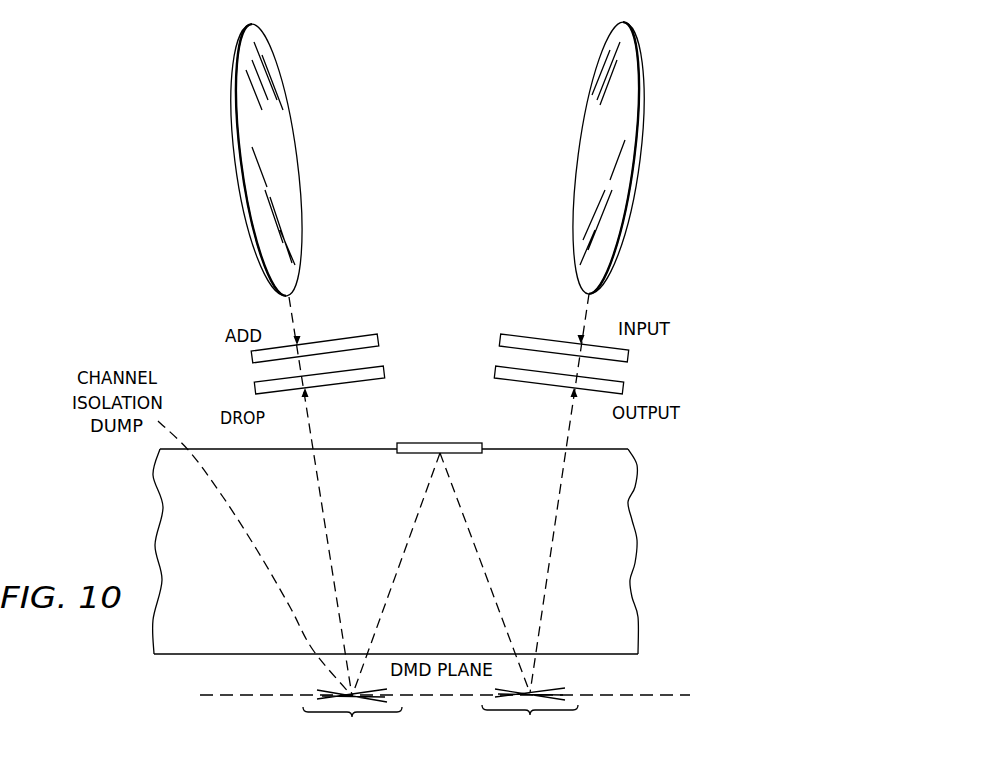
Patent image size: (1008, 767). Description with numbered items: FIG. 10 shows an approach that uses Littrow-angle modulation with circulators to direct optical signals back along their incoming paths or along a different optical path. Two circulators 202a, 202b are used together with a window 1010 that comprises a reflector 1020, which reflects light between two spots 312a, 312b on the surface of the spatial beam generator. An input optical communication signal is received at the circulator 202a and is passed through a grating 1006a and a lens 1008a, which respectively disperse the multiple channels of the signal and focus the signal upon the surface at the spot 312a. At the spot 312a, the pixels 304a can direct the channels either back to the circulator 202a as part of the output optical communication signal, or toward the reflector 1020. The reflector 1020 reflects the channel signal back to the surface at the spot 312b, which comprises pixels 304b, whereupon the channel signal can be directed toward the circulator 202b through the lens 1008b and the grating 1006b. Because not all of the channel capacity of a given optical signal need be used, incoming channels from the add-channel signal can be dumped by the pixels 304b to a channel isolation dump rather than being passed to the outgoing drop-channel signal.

The circulator 202b is at (288, 118).
The circulator 202a is at (588, 112).
The grating 1006b is at (378, 340).
The lens 1008b is at (384, 371).
The grating 1006a is at (628, 354).
The lens 1008a is at (623, 386).
The reflector 1020 is at (455, 443).
The window 1010 is at (637, 560).
The pixels 304b is at (343, 692).
The pixels 304a is at (545, 690).
The spot 312b is at (352, 725).
The spot 312a is at (530, 724).